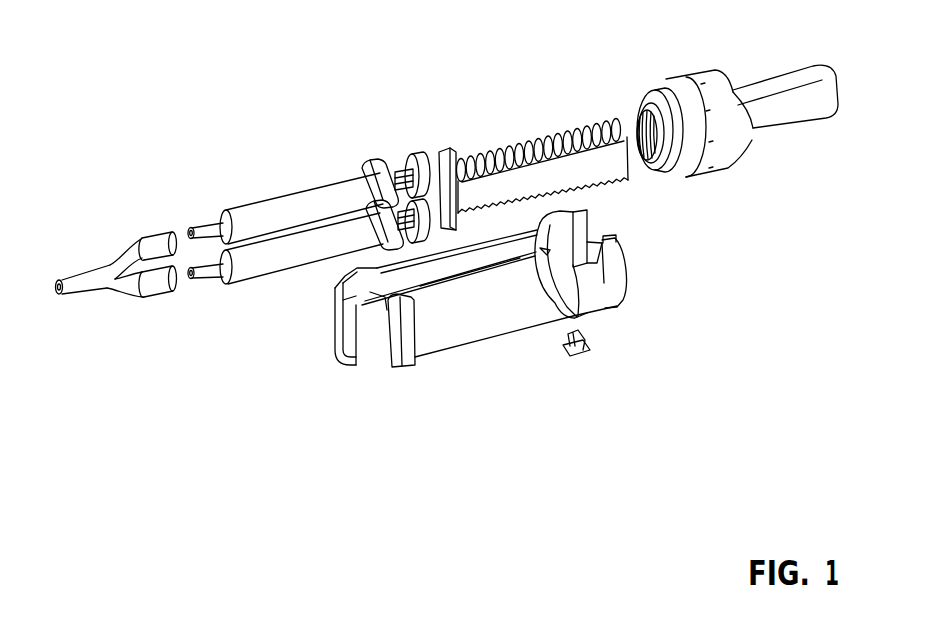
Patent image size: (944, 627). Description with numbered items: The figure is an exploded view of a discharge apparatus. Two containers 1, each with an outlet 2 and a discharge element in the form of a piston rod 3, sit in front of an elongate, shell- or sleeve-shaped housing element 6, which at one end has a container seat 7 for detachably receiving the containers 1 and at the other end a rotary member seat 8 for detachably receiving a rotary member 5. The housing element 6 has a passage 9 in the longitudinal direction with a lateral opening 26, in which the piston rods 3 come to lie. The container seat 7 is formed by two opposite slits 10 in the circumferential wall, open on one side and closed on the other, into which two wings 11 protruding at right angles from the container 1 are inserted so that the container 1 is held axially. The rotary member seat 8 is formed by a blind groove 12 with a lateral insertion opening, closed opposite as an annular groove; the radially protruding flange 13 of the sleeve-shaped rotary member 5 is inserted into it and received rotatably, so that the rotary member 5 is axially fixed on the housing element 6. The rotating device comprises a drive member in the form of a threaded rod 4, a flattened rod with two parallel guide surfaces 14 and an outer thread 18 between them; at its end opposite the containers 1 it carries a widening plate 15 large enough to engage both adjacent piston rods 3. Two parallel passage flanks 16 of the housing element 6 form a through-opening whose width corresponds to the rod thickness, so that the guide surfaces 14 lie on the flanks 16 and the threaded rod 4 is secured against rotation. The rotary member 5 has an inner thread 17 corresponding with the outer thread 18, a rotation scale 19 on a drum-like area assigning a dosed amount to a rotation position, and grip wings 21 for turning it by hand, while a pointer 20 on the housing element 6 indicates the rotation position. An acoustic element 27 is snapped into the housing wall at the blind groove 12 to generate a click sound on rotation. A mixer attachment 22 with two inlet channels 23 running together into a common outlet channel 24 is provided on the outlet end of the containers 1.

The container 1 is at (280, 206).
The outlet 2 is at (207, 228).
The piston rod 3 is at (395, 156).
The threaded rod 4 is at (540, 144).
The rotary member 5 is at (719, 91).
The housing element 6 is at (487, 317).
The container seat 7 is at (387, 296).
The rotary member seat 8 is at (597, 225).
The passage 9 is at (350, 345).
The slit 10 is at (388, 294).
The wing 11 is at (367, 167).
The blind groove 12 is at (617, 245).
The flange 13 is at (648, 102).
The guide surface 14 is at (487, 187).
The widening plate 15 is at (447, 177).
The passage flank 16 is at (585, 303).
The inner thread 17 is at (645, 133).
The outer thread 18 is at (527, 147).
The rotation scale 19 is at (705, 78).
The pointer 20 is at (613, 290).
The grip wings 21 is at (813, 107).
The mixer attachment 22 is at (108, 278).
The inlet channel 23 is at (157, 240).
The outlet channel 24 is at (80, 283).
The lateral opening 26 is at (484, 258).
The acoustic element 27 is at (583, 365).